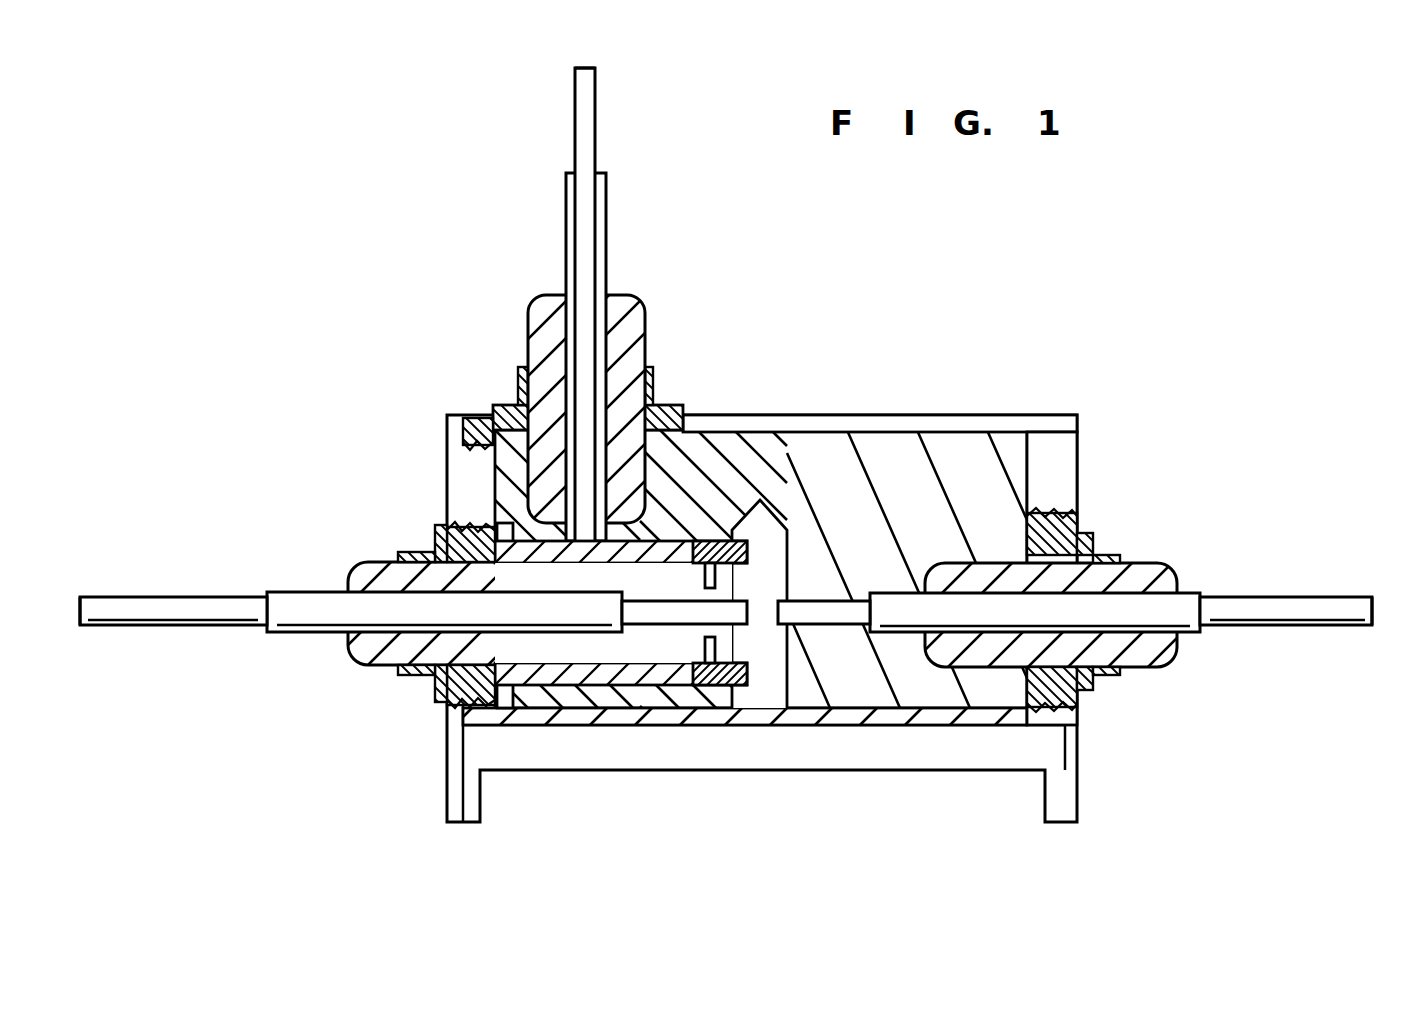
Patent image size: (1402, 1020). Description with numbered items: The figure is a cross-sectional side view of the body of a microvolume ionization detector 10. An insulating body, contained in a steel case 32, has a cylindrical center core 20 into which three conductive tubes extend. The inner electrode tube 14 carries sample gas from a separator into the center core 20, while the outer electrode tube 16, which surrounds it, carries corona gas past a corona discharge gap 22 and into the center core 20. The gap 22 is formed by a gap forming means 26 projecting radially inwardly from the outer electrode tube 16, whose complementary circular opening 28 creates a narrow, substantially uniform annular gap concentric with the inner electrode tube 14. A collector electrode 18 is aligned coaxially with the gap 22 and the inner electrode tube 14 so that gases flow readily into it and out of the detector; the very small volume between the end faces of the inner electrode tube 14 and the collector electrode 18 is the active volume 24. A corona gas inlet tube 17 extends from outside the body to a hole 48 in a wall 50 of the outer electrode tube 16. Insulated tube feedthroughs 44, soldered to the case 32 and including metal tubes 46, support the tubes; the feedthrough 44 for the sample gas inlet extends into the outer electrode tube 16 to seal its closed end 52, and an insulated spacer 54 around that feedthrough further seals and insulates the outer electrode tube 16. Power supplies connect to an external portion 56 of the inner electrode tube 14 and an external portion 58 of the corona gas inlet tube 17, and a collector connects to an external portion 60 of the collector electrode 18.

The microvolume ionization detector 10 is at (877, 385).
The inner electrode tube 14 is at (200, 628).
The outer electrode tube 16 is at (690, 548).
The corona gas inlet tube 17 is at (596, 125).
The collector electrode 18 is at (1258, 600).
The center core 20 is at (777, 645).
The corona discharge gap 22 is at (663, 607).
The active volume 24 is at (763, 600).
The gap forming means 26 is at (735, 645).
The circular opening 28 is at (718, 650).
The steel case 32 is at (1055, 432).
The insulated tube feedthroughs 44 is at (630, 300).
The metal tubes 46 is at (566, 200).
The hole 48 is at (592, 545).
The wall 50 is at (528, 530).
The closed end 52 is at (530, 555).
The insulated spacer 54 is at (508, 690).
The external portion of the inner electrode tube 56 is at (78, 627).
The external portion of the corona gas inlet tube 58 is at (582, 82).
The external portion of the collector electrode tube 60 is at (1305, 612).